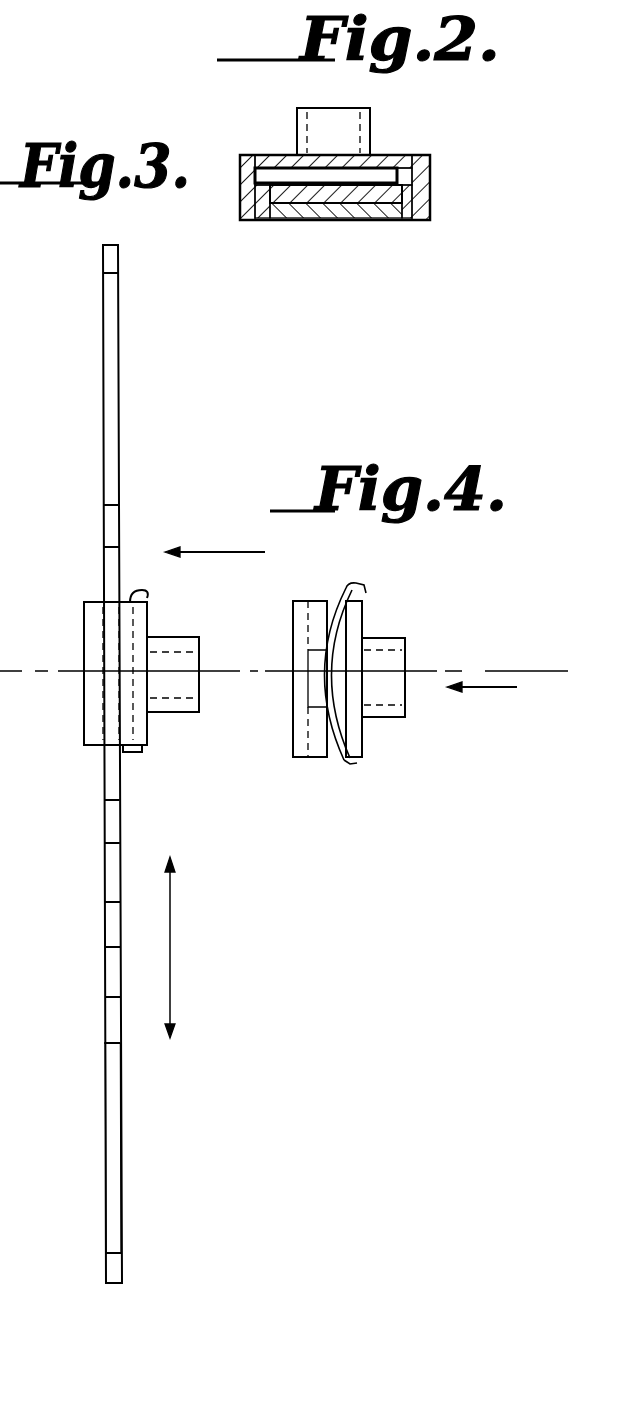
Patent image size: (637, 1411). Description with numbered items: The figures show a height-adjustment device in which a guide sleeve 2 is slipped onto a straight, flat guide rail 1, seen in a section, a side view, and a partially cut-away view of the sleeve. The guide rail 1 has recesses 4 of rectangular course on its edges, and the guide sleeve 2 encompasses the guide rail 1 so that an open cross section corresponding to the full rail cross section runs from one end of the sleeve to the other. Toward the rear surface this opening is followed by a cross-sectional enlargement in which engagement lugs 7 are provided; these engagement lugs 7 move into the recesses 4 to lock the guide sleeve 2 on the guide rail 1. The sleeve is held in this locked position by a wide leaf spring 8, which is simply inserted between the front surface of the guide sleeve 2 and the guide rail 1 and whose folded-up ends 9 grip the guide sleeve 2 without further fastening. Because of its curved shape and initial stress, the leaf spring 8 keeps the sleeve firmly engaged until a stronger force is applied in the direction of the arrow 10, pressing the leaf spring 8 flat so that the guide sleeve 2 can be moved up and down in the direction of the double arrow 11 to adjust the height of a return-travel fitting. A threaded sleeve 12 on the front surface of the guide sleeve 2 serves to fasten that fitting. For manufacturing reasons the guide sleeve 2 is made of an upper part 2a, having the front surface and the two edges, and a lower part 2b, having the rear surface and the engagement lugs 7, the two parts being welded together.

In FIG. 2, the guide rail 1 is at (310, 220).
In FIG. 3, the guide rail 1 is at (112, 1168).
In FIG. 4, the guide rail 1 is at (300, 730).
In FIG. 2, the guide sleeve 2 is at (238, 171).
In FIG. 3, the guide sleeve 2 is at (155, 617).
In FIG. 4, the guide sleeve 2 is at (335, 710).
In FIG. 2, the upper part 2a is at (430, 187).
In FIG. 4, the upper part 2a is at (353, 738).
In FIG. 2, the lower part 2b is at (393, 220).
In FIG. 4, the lower part 2b is at (291, 710).
In FIG. 2, the recesses 4 is at (285, 210).
In FIG. 3, the recesses 4 is at (117, 1030).
In FIG. 2, the engagement lugs 7 is at (262, 202).
In FIG. 4, the engagement lugs 7 is at (320, 748).
In FIG. 2, the leaf spring 8 is at (292, 187).
In FIG. 4, the leaf spring 8 is at (340, 630).
In FIG. 2, the folded-up ends 9 is at (372, 176).
In FIG. 3, the folded-up ends 9 is at (135, 752).
In FIG. 4, the folded-up ends 9 is at (360, 586).
In FIG. 3, the arrow 10 is at (228, 549).
In FIG. 4, the arrow 10 is at (490, 690).
In FIG. 3, the double arrow 11 is at (170, 962).
In FIG. 2, the threaded sleeve 12 is at (367, 127).
In FIG. 3, the threaded sleeve 12 is at (185, 705).
In FIG. 4, the threaded sleeve 12 is at (405, 641).